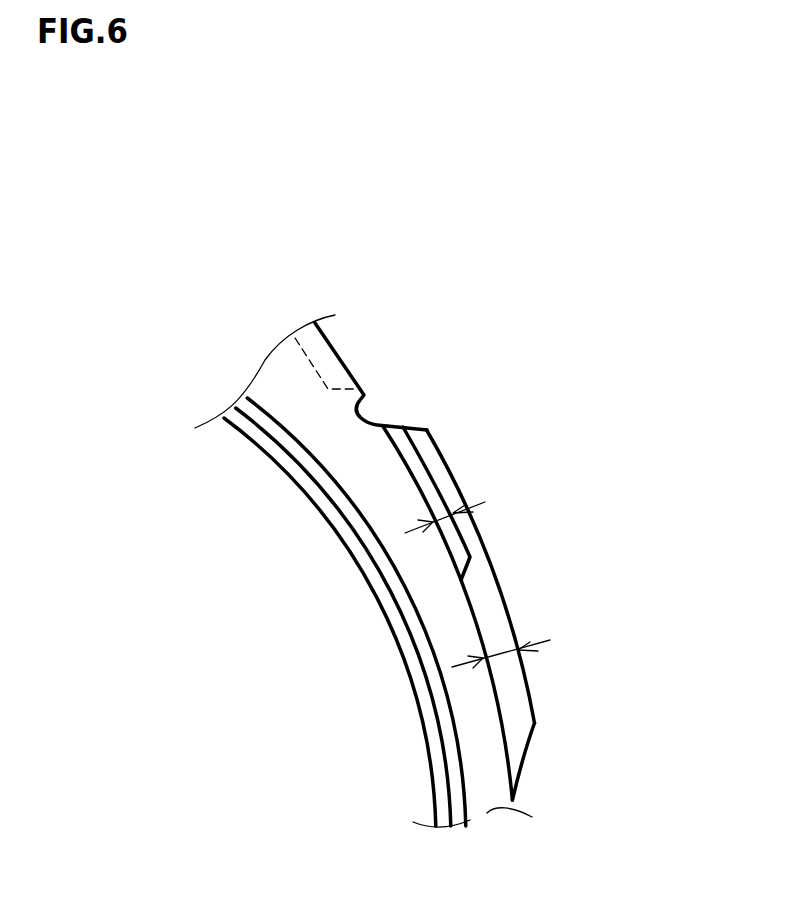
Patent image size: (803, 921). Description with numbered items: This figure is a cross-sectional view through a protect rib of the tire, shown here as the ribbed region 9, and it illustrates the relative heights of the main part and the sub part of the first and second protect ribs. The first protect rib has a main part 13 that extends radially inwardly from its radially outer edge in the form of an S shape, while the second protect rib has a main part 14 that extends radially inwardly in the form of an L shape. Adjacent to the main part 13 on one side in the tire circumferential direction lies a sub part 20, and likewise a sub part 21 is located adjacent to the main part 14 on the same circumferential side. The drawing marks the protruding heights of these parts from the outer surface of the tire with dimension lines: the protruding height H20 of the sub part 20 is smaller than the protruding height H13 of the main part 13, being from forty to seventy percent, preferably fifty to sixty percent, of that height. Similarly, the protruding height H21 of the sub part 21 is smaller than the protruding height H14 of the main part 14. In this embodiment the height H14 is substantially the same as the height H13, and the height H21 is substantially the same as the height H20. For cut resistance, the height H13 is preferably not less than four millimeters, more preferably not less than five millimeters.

The tire bead portion / rim-side wall 9 is at (452, 571).
The main part 13 is at (546, 615).
The main part 14 is at (497, 572).
The sub part 20 is at (496, 450).
The sub part 21 is at (427, 463).
The protruding height H20 is at (323, 570).
The protruding height H21 is at (445, 517).
The protruding height H13 is at (356, 703).
The protruding height H14 is at (500, 657).